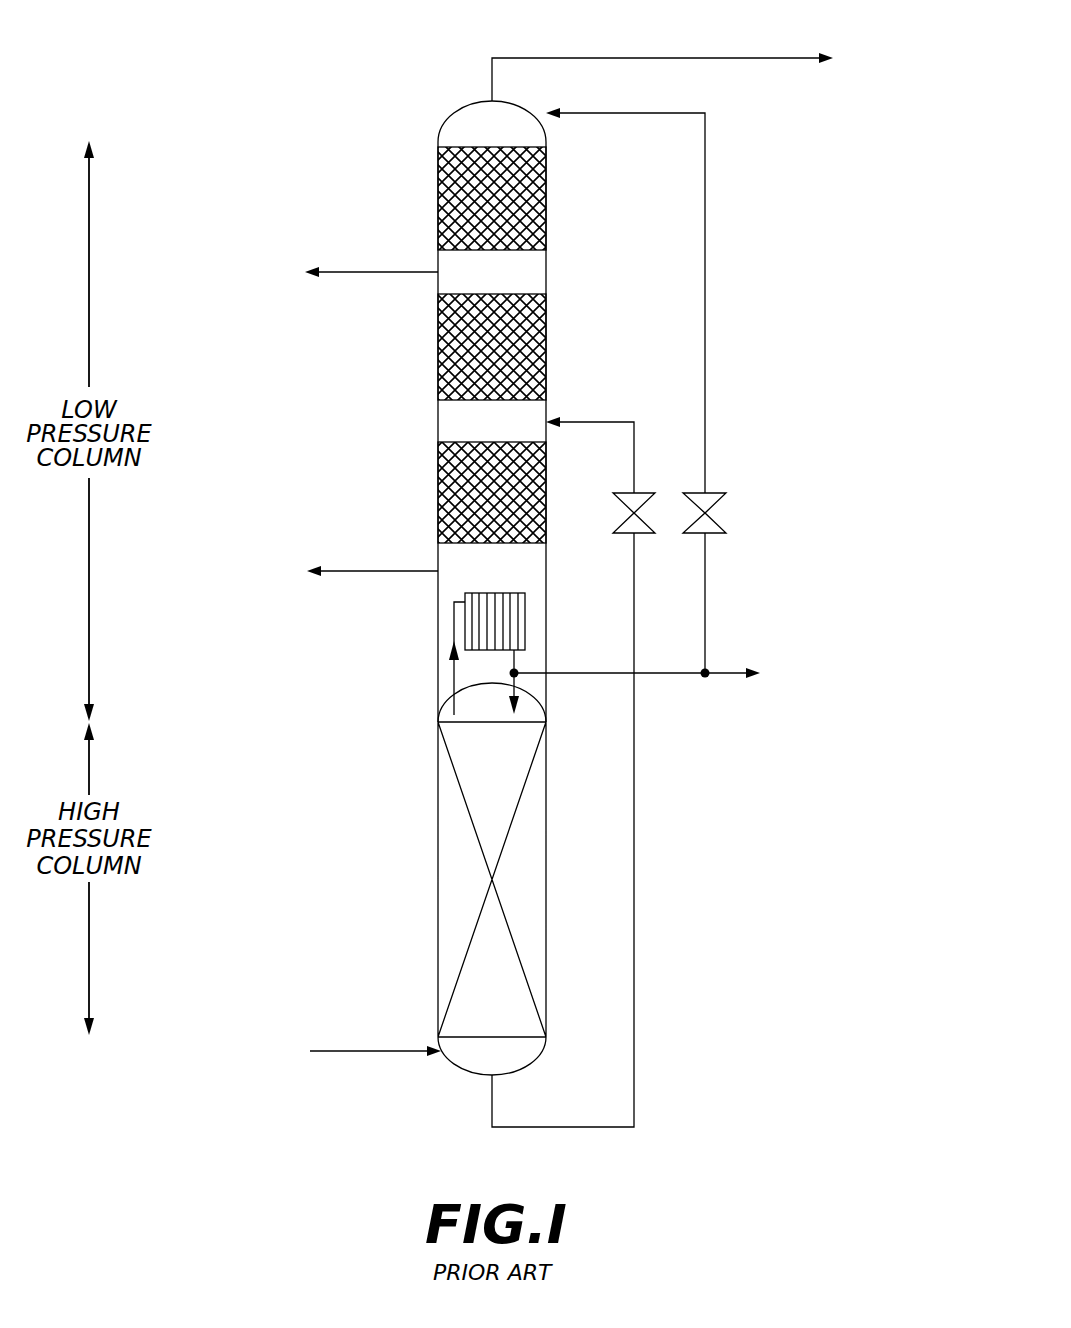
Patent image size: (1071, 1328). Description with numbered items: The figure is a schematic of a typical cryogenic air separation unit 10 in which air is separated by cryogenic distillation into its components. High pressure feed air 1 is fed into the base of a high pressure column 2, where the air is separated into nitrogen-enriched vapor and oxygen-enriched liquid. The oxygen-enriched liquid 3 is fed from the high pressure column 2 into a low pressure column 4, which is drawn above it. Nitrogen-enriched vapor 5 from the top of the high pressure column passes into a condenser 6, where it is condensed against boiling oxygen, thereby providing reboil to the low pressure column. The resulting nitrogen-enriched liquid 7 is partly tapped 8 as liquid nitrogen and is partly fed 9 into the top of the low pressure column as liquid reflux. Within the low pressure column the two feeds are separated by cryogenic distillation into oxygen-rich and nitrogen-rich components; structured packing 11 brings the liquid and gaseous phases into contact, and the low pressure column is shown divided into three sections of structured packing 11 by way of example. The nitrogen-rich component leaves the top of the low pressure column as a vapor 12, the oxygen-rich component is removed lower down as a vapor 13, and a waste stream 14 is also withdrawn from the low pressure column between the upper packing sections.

The high pressure feed air 1 is at (383, 1051).
The high pressure column 2 is at (438, 868).
The oxygen-enriched liquid 3 is at (583, 1127).
The low pressure column 4 is at (546, 270).
The nitrogen-enriched vapor 5 is at (452, 687).
The condenser 6 is at (525, 622).
The nitrogen-enriched liquid 7 is at (515, 663).
The tapped nitrogen-enriched liquid 8 is at (726, 677).
The liquid reflux feed 9 is at (605, 113).
The cryogenic air separation unit 10 is at (398, 64).
The structured packing 11 is at (438, 185).
The nitrogen-rich vapor 12 is at (728, 58).
The oxygen-rich vapor 13 is at (353, 571).
The waste stream 14 is at (402, 272).